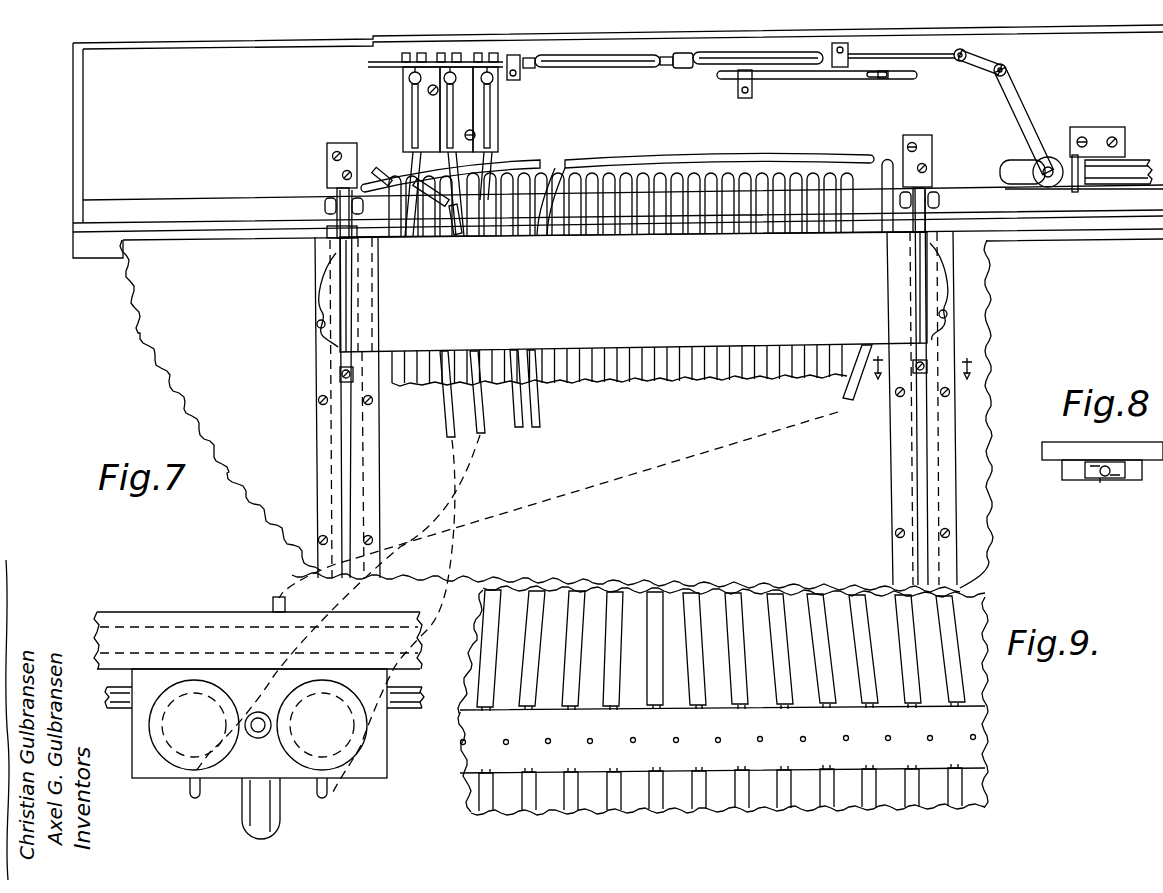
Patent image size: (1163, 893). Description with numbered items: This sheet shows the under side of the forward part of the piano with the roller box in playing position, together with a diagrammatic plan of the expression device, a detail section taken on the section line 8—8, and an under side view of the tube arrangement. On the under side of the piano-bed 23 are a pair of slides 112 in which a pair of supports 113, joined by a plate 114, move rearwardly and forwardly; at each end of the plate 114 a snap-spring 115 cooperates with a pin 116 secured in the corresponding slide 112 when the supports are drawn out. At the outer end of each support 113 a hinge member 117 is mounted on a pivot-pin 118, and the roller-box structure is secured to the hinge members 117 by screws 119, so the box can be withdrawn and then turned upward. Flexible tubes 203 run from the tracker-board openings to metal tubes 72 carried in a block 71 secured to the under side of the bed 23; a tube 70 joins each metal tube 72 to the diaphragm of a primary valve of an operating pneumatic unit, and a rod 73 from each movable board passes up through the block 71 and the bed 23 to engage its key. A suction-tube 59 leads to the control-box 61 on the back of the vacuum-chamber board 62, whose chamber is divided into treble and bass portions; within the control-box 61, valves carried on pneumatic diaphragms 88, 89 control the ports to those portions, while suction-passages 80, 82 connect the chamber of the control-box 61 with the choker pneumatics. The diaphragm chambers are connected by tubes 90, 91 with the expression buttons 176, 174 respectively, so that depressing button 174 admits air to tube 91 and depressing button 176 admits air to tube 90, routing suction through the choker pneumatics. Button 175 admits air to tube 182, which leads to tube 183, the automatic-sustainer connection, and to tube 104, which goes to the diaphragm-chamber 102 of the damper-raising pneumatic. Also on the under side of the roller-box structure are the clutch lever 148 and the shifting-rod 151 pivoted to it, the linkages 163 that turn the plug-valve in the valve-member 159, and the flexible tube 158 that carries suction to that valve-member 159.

In FIG. 7, the piano-bed 23 is at (982, 504).
In FIG. 8, the piano-bed 23 is at (1044, 447).
In FIG. 7, the slides 112 is at (320, 473).
In FIG. 8, the slides 112 is at (1072, 480).
In FIG. 7, the supports 113 is at (328, 238).
In FIG. 8, the supports 113 is at (1110, 480).
In FIG. 7, the plate 114 is at (710, 335).
In FIG. 7, the flexible tube 203 is at (637, 192).
In FIG. 9, the flexible tube 203 is at (945, 618).
In FIG. 7, the tube 182 is at (545, 158).
In FIG. 7, the tube 183 is at (380, 174).
In FIG. 7, the expression button 174 is at (410, 48).
In FIG. 7, the expression button 175 is at (450, 48).
In FIG. 7, the expression button 176 is at (494, 50).
In FIG. 7, the diaphragm-chamber 102 is at (623, 66).
In FIG. 7, the shifting-rod 151 is at (820, 80).
In FIG. 7, the lever 148 is at (885, 80).
In FIG. 7, the linkages 163 is at (1012, 85).
In FIG. 7, the valve-member 159 is at (1050, 168).
In FIG. 7, the flexible tube 158 is at (1135, 166).
In FIG. 7, the hinge member 117 is at (332, 173).
In FIG. 7, the screws 119 is at (350, 172).
In FIG. 7, the pivot-pin 118 is at (325, 207).
In FIG. 7, the snap-spring 115 is at (322, 313).
In FIG. 7, the pin 116 is at (321, 328).
In FIG. 7, the tube 91 is at (445, 431).
In FIG. 7, the tube 104 is at (483, 435).
In FIG. 7, the tube 90 is at (520, 428).
In FIG. 7, the section line 8 is at (914, 372).
In FIG. 7, the vacuum-chamber board 62 is at (195, 624).
In FIG. 7, the control-box 61 is at (232, 771).
In FIG. 7, the pneumatic diaphragm 88 is at (170, 762).
In FIG. 7, the pneumatic diaphragm 89 is at (313, 766).
In FIG. 7, the suction-passage 80 is at (118, 707).
In FIG. 7, the suction-passageway 82 is at (408, 707).
In FIG. 7, the suction-tube 59 is at (248, 822).
In FIG. 9, the metal tubes 72 is at (655, 709).
In FIG. 9, the block 71 is at (980, 722).
In FIG. 9, the rod 73 is at (504, 742).
In FIG. 9, the tube 70 is at (868, 802).